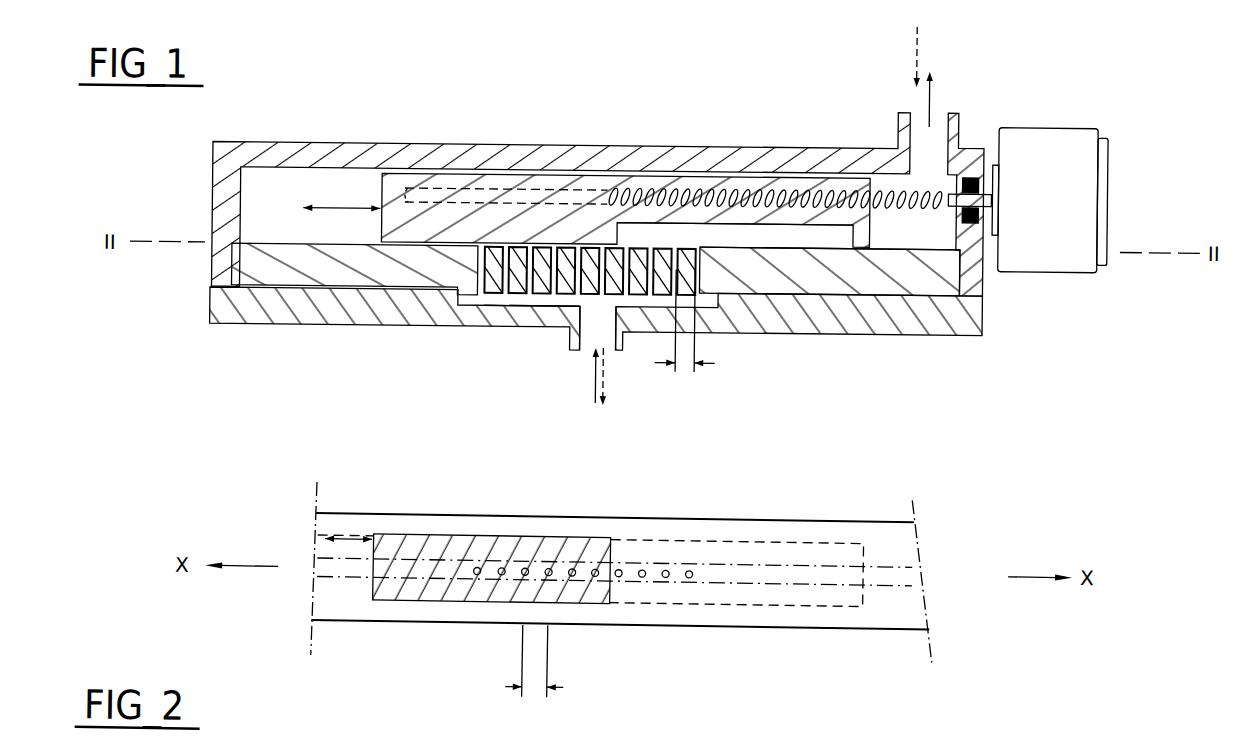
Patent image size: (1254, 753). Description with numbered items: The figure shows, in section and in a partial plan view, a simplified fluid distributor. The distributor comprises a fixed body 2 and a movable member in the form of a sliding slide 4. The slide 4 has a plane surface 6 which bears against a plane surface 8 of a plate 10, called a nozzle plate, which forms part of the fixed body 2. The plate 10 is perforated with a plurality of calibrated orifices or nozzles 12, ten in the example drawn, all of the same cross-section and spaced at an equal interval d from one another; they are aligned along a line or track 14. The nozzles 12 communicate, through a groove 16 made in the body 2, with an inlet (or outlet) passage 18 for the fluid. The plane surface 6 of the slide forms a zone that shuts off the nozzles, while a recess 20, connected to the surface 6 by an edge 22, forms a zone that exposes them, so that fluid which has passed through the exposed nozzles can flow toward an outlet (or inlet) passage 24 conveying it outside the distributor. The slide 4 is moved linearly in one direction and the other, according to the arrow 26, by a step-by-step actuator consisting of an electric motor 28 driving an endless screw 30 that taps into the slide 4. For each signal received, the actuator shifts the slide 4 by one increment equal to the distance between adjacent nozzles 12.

In FIG. 1, the fixed body 2 is at (270, 309).
In FIG. 1, the sliding slide 4 is at (378, 195).
In FIG. 2, the sliding slide 4 is at (452, 523).
In FIG. 1, the plane surface 6 is at (400, 228).
In FIG. 2, the plane surface 6 is at (553, 546).
In FIG. 1, the plane surface 8 is at (747, 241).
In FIG. 1, the nozzle plate 10 is at (798, 269).
In FIG. 2, the nozzle plate 10 is at (357, 521).
In FIG. 1, the calibrated orifices or nozzles 12 is at (467, 260).
In FIG. 2, the calibrated orifices or nozzles 12 is at (477, 566).
In FIG. 2, the line or track 14 is at (340, 567).
In FIG. 1, the groove 16 is at (522, 297).
In FIG. 1, the inlet (or outlet) passage 18 is at (597, 329).
In FIG. 1, the recess 20 is at (717, 222).
In FIG. 1, the edge 22 is at (642, 222).
In FIG. 2, the edge 22 is at (612, 547).
In FIG. 1, the outlet (or inlet) passage 24 is at (933, 125).
In FIG. 1, the arrow 26 is at (325, 206).
In FIG. 1, the electric motor 28 is at (1052, 244).
In FIG. 1, the endless screw 30 is at (888, 176).